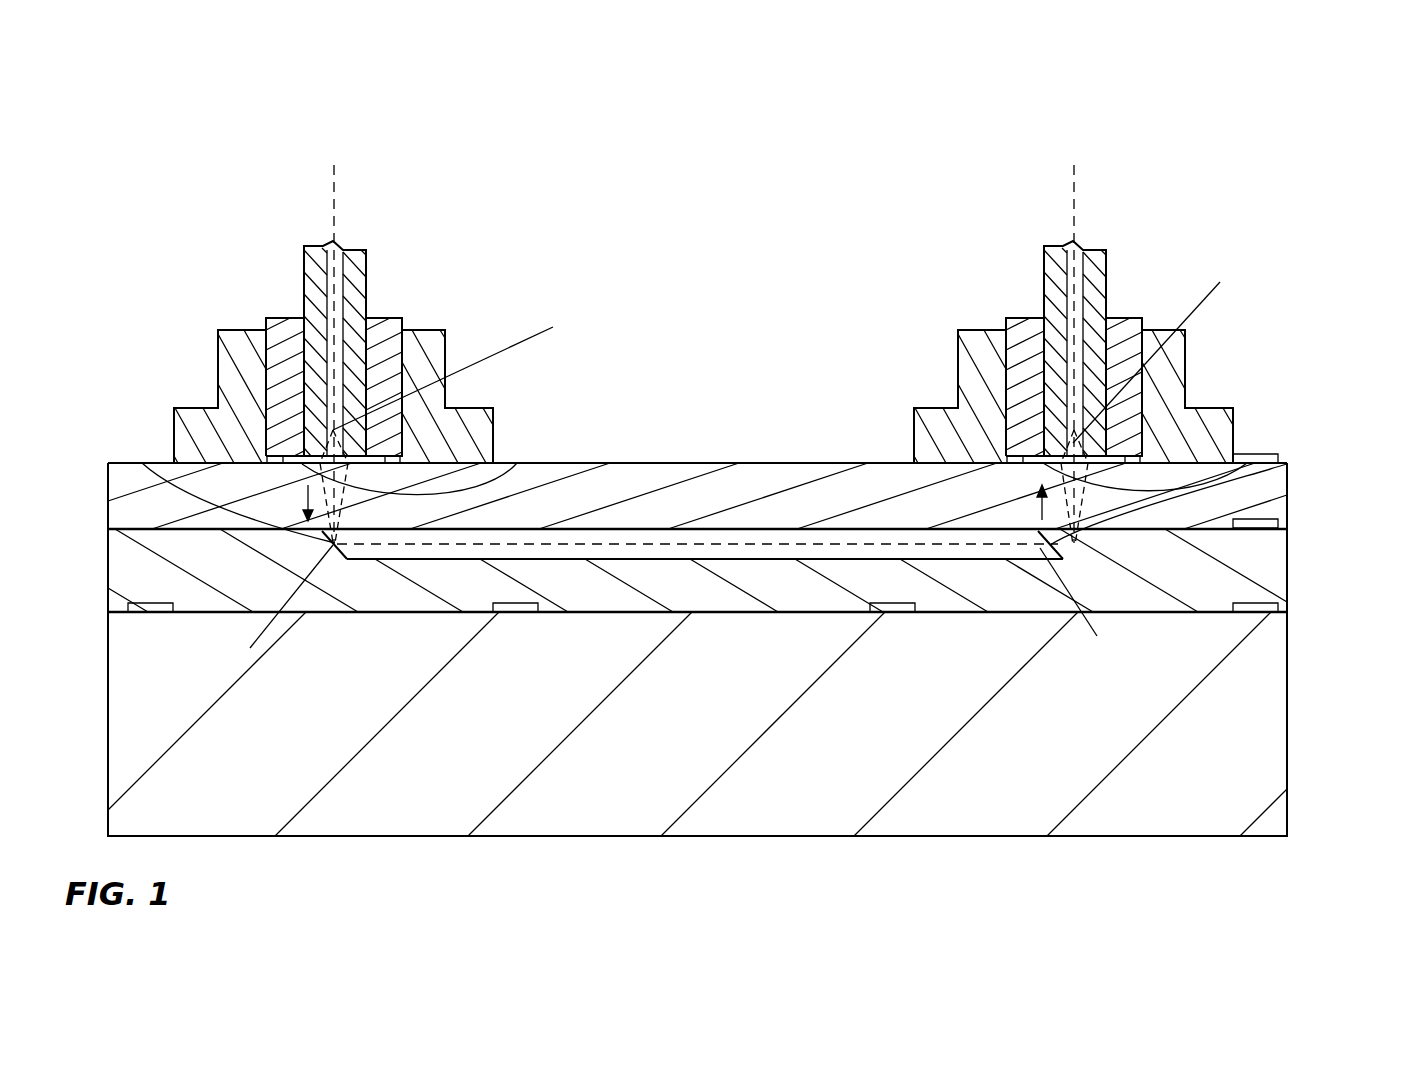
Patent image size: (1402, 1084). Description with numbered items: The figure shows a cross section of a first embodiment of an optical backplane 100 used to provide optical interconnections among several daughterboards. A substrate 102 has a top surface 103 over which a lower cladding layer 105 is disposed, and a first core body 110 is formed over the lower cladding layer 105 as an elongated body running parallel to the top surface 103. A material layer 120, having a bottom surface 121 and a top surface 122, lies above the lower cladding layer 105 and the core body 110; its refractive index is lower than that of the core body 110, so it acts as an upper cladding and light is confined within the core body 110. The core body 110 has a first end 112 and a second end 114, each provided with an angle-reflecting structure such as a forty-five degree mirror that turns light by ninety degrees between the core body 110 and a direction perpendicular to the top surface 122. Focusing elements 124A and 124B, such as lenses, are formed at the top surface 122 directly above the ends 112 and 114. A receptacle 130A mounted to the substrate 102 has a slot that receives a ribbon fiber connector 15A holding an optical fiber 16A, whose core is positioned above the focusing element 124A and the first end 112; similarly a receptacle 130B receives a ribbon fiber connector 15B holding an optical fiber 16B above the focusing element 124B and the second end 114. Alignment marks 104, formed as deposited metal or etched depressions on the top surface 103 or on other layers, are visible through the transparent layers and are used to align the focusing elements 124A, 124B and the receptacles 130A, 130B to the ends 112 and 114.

The optical backplane 100 is at (183, 145).
The substrate 102 is at (108, 715).
The top surface 103 is at (108, 603).
The alignment marks 104 is at (152, 607).
The lower cladding layer 105 is at (108, 578).
The first core body 110 is at (762, 528).
The first end 112 is at (108, 475).
The second end 114 is at (1288, 490).
The material layer 120 is at (108, 502).
The bottom surface 121 is at (155, 529).
The top surface 122 is at (150, 462).
The focusing element 124A is at (517, 463).
The focusing element 124B is at (1287, 464).
The receptacle 130A is at (218, 373).
The receptacle 130B is at (958, 373).
The ribbon fiber connector 15A is at (273, 318).
The ribbon fiber connector 15B is at (1013, 318).
The optical fiber 16A is at (304, 265).
The optical fiber 16B is at (1044, 265).